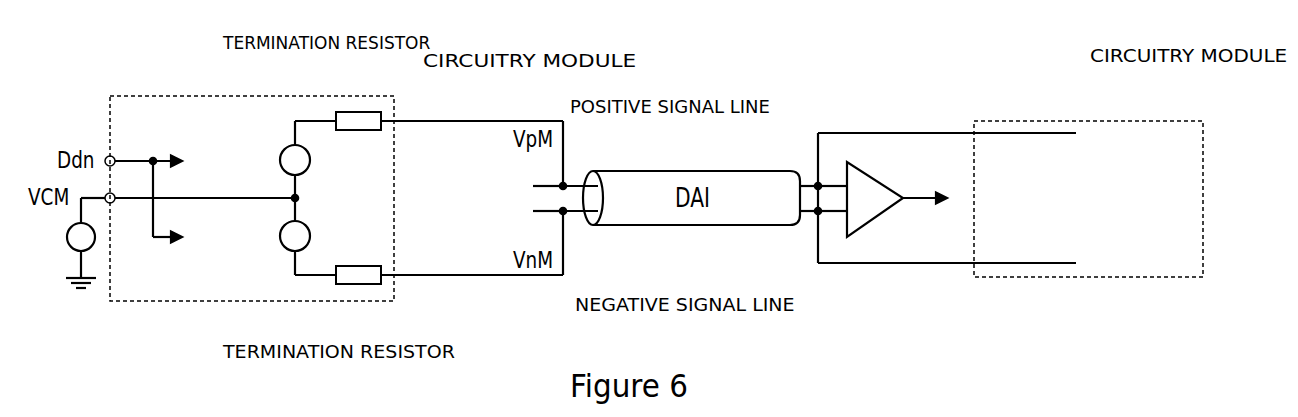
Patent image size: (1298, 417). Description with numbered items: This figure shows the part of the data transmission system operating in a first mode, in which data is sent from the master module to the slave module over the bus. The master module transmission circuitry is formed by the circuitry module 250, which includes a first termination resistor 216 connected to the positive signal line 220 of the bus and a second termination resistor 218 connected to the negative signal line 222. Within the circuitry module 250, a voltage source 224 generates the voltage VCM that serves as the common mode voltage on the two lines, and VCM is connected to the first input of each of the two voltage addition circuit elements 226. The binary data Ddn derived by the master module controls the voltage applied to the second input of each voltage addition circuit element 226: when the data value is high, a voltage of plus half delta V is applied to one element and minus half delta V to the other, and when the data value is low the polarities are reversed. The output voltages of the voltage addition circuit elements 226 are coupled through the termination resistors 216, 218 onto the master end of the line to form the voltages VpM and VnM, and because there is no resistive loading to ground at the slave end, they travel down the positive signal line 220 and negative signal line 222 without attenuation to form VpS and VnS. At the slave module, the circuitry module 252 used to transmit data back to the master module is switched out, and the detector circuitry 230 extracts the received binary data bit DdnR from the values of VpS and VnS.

The first termination resistor 216 is at (337, 112).
The second termination resistor 218 is at (337, 285).
The positive signal line 220 is at (578, 184).
The negative signal line 222 is at (576, 214).
The voltage source 224 is at (68, 243).
The voltage addition circuit element 226 is at (312, 160).
The detector circuitry 230 is at (885, 212).
The circuitry module 250 is at (396, 105).
The circuitry module 252 is at (1105, 121).